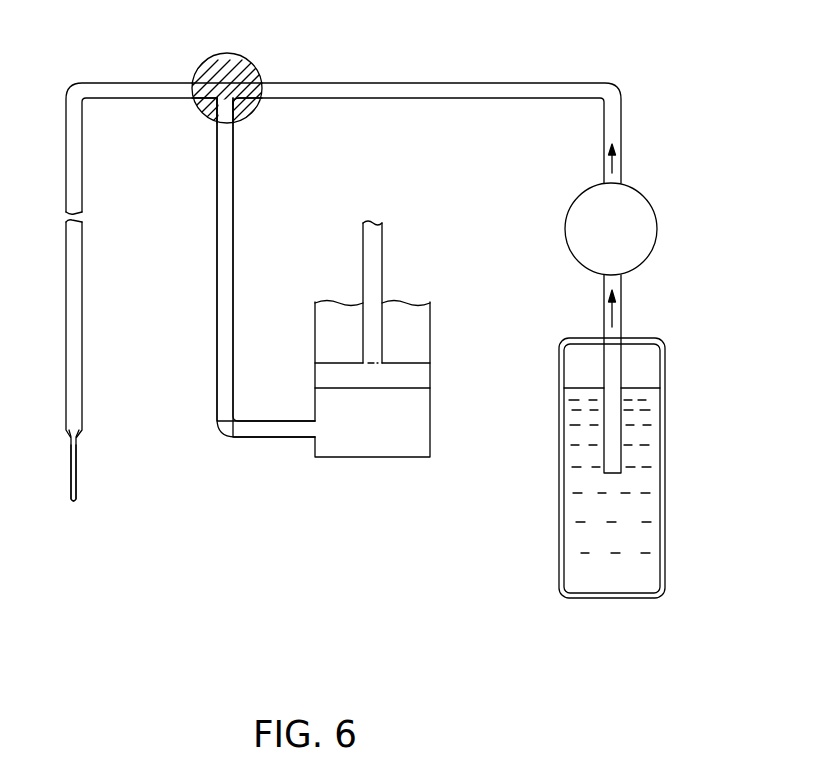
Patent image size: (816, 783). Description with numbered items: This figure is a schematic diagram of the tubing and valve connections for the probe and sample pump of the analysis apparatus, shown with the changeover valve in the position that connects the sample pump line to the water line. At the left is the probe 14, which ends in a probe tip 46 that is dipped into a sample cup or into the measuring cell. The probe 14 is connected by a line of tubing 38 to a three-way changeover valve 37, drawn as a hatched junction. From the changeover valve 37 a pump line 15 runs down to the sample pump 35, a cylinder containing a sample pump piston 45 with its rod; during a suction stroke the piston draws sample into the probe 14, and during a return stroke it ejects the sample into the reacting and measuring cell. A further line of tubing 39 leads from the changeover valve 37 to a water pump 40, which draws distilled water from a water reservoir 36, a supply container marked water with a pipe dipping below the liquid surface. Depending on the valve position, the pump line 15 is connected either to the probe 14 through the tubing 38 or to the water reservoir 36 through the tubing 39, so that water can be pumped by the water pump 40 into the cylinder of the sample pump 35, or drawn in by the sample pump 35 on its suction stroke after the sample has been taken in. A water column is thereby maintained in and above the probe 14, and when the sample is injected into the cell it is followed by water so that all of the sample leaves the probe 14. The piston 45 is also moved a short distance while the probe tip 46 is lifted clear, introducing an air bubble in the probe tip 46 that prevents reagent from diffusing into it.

The probe 14 is at (82, 333).
The pump line 15 is at (233, 247).
The sample pump 35 is at (432, 430).
The water reservoir 36 is at (665, 530).
The changeover valve 37 is at (266, 111).
The tubing 38 is at (100, 82).
The tubing 39 is at (487, 99).
The water pump 40 is at (658, 238).
The sample pump piston 45 is at (422, 378).
The probe tip 46 is at (70, 461).